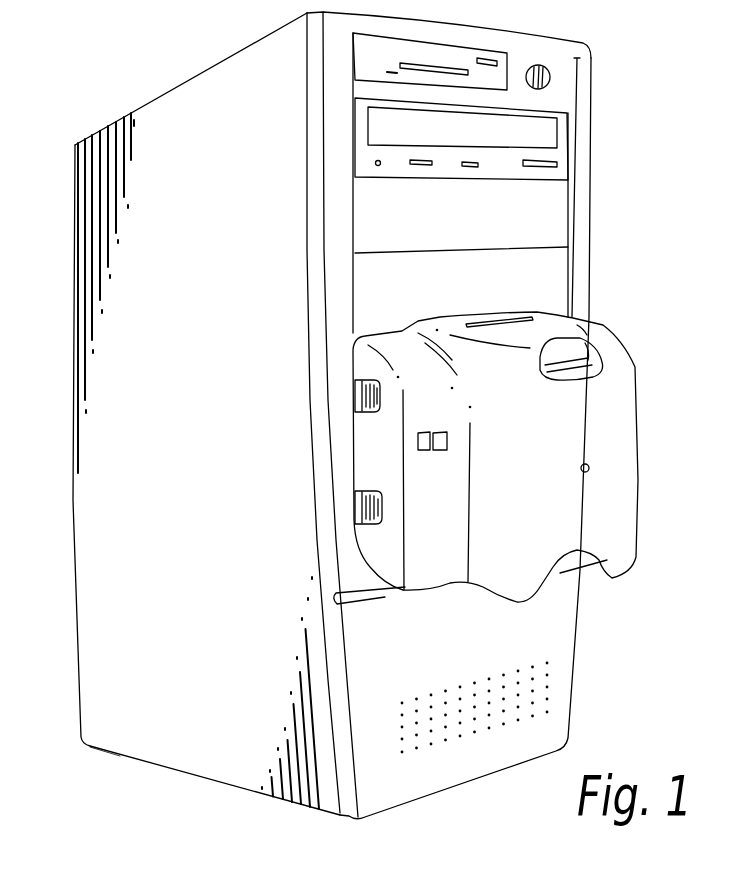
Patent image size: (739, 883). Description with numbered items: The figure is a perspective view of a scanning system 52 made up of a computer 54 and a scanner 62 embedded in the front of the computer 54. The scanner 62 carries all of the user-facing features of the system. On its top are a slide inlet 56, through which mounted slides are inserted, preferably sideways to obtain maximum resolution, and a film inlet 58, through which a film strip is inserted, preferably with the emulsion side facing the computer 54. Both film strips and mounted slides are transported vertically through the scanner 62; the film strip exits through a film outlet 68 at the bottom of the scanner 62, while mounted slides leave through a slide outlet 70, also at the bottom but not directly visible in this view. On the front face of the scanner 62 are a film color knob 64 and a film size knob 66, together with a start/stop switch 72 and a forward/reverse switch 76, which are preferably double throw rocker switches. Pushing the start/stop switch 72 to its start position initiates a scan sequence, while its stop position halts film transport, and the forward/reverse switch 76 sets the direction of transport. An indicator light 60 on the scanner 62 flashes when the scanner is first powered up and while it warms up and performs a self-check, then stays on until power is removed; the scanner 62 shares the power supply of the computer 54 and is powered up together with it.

The scanning system 52 is at (107, 58).
The computer 54 is at (593, 78).
The slide inlet 56 is at (520, 312).
The film inlet 58 is at (580, 357).
The indicator light 60 is at (589, 466).
The embedded scanner 62 is at (598, 530).
The film color knob 64 is at (357, 507).
The film size knob 66 is at (357, 395).
The film outlet 68 is at (588, 586).
The slide outlet 70 is at (507, 608).
The start/stop switch 72 is at (418, 441).
The forward/reverse switch 76 is at (447, 440).